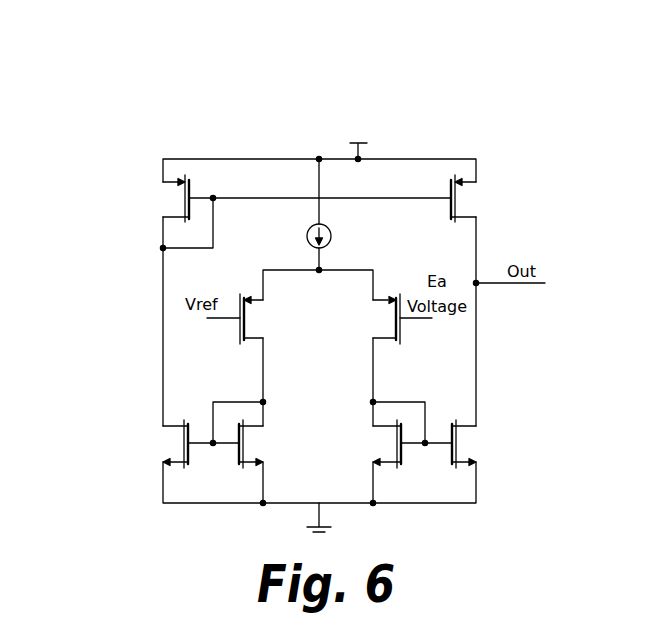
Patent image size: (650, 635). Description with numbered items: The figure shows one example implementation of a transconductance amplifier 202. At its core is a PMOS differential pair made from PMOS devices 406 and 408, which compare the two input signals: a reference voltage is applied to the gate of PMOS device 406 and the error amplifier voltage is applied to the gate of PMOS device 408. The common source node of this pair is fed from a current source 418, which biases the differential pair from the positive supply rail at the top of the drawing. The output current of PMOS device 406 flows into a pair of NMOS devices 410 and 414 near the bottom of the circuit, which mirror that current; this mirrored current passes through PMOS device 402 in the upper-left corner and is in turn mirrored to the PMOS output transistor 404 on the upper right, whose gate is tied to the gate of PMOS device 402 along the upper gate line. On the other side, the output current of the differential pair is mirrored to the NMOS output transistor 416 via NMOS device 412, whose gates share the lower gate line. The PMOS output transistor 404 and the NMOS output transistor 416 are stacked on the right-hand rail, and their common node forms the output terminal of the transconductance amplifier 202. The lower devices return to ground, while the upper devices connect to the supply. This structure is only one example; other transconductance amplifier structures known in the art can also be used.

The transconductance amplifier 202 is at (88, 150).
The PMOS device 402 is at (164, 206).
The PMOS output transistor 404 is at (472, 214).
The PMOS device 406 is at (263, 328).
The PMOS device 408 is at (376, 328).
The NMOS device 410 is at (258, 456).
The NMOS device 412 is at (380, 456).
The NMOS device 414 is at (165, 448).
The NMOS output transistor 416 is at (474, 442).
The current source 418 is at (306, 236).